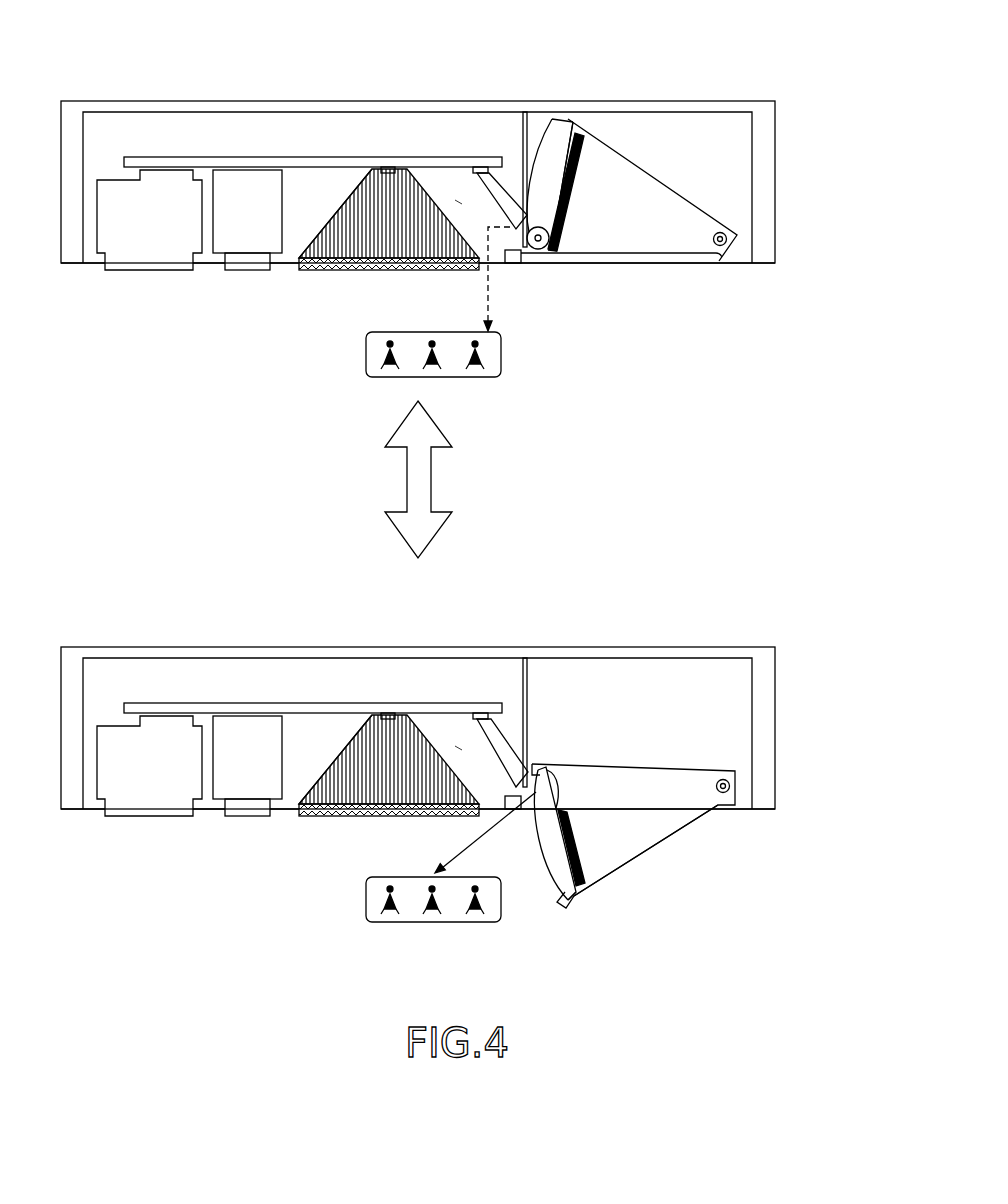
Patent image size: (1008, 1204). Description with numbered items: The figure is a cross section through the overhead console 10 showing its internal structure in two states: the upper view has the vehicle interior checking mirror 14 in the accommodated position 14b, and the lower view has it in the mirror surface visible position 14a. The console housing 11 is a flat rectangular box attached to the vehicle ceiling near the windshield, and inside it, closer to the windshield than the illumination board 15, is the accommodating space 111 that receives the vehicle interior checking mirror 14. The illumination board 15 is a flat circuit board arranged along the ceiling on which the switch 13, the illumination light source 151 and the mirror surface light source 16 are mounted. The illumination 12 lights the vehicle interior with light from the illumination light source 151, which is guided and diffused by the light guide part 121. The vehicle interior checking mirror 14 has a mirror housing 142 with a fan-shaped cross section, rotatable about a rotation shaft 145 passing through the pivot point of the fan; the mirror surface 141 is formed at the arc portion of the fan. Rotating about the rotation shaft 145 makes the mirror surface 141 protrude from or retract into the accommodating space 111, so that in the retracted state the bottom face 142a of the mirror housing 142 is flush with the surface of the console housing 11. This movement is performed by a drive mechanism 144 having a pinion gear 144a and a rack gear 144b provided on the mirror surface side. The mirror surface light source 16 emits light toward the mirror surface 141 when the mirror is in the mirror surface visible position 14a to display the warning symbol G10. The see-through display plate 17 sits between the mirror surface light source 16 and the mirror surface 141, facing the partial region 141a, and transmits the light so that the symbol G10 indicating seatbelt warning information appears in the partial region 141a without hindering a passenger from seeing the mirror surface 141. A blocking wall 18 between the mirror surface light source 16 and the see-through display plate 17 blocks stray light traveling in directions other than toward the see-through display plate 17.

The overhead console 10 is at (158, 92).
The console housing 11 is at (780, 98).
The accommodating space 111 is at (717, 113).
The illumination 12 is at (340, 271).
The light guide part 121 is at (322, 233).
The switch 13 is at (149, 271).
The vehicle interior checking mirror 14 is at (680, 180).
The mirror surface visible position 14a is at (702, 737).
The accommodated position 14b is at (712, 186).
The mirror surface 141 is at (573, 124).
The partial region 141a is at (557, 786).
The mirror housing 142 is at (660, 230).
The bottom face 142a is at (688, 262).
The drive mechanism 144 is at (520, 320).
The pinion gear 144a is at (542, 262).
The rack gear 144b is at (570, 203).
The rotation shaft 145 is at (735, 240).
The illumination board 15 is at (305, 148).
The illumination light source 151 is at (388, 166).
The mirror surface light source 16 is at (488, 188).
The see-through display plate 17 is at (523, 112).
The blocking wall 18 is at (462, 203).
The symbol G10 is at (474, 341).